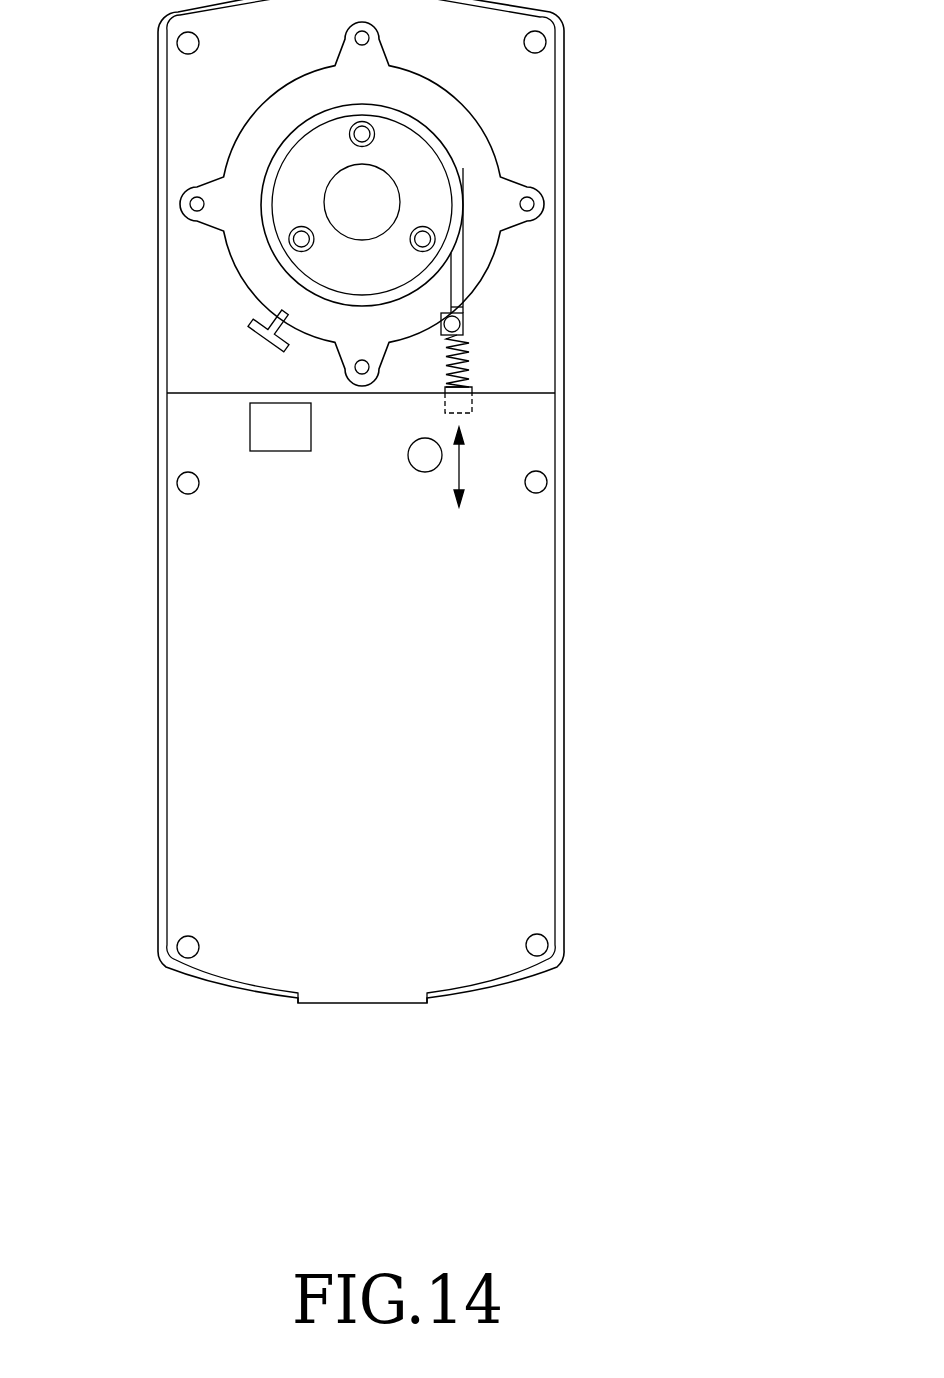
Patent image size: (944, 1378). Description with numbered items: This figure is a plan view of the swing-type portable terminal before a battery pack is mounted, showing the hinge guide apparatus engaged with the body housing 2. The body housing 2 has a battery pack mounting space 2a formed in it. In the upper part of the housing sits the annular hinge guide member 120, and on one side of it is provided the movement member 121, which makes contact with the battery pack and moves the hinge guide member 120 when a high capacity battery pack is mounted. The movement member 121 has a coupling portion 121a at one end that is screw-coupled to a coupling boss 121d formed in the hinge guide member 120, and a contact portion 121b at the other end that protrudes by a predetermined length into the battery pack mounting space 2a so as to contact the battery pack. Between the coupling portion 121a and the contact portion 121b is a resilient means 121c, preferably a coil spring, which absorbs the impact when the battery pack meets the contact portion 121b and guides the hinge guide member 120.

The body housing 2 is at (153, 417).
The battery pack mounting space 2a is at (185, 550).
The hinge guide member 120 is at (457, 165).
The movement member 121 is at (610, 302).
The coupling boss 121d is at (460, 262).
The coupling portion 121a is at (456, 323).
The resilient means 121c is at (468, 355).
The contact portion 121b is at (565, 411).